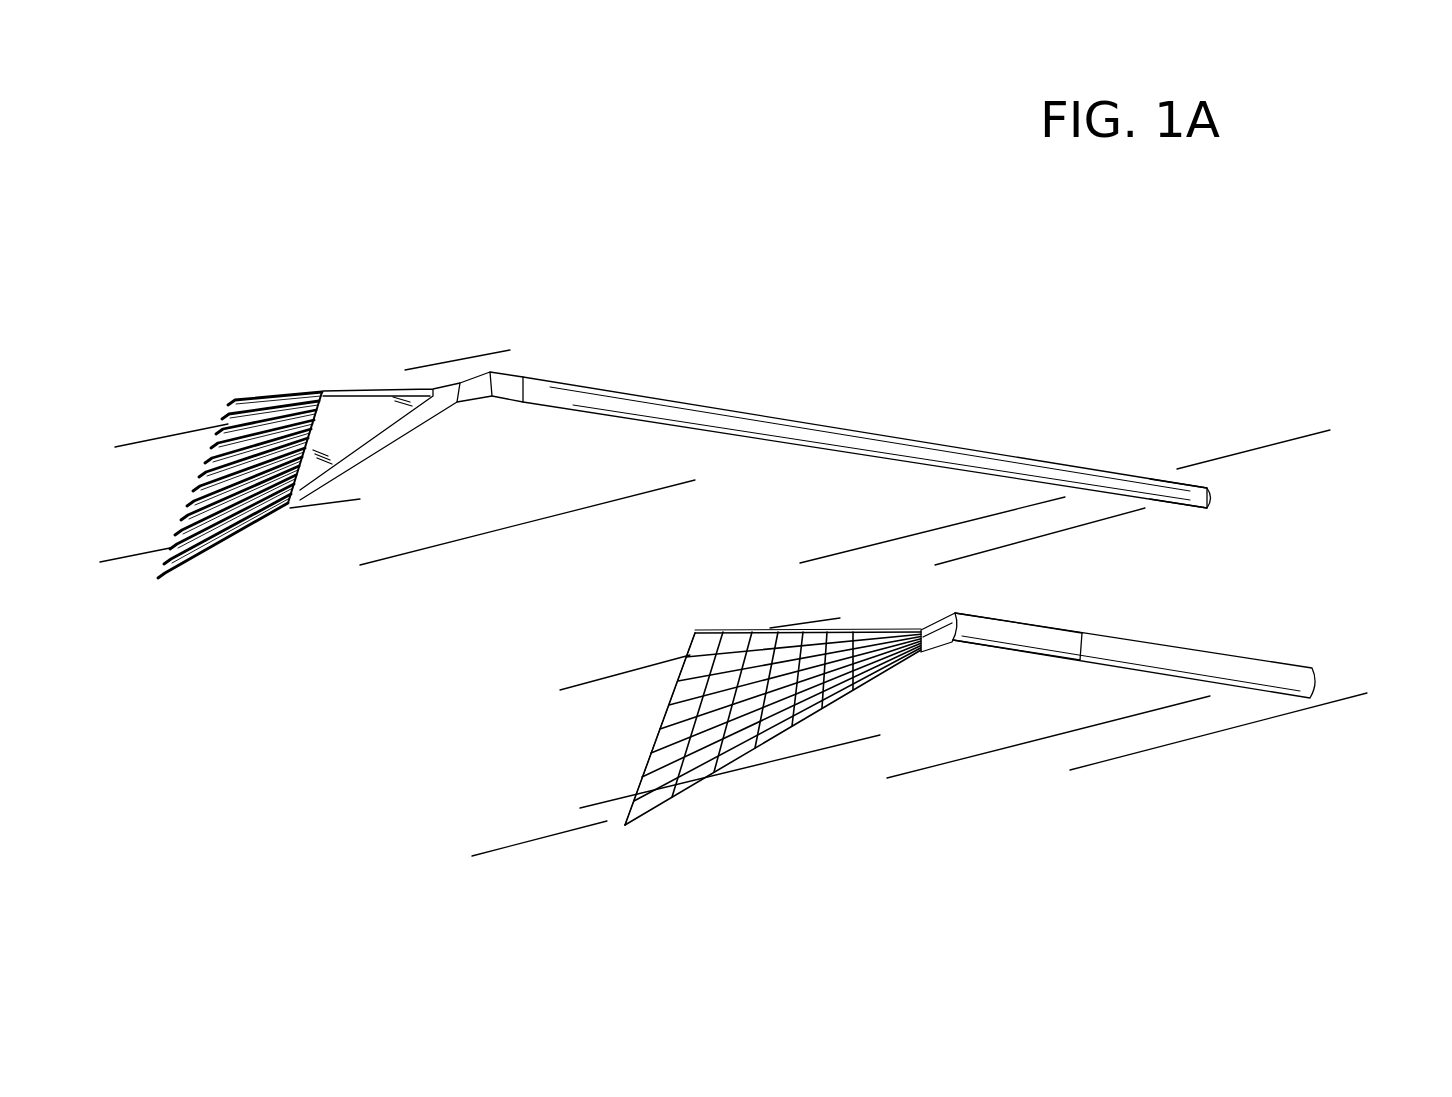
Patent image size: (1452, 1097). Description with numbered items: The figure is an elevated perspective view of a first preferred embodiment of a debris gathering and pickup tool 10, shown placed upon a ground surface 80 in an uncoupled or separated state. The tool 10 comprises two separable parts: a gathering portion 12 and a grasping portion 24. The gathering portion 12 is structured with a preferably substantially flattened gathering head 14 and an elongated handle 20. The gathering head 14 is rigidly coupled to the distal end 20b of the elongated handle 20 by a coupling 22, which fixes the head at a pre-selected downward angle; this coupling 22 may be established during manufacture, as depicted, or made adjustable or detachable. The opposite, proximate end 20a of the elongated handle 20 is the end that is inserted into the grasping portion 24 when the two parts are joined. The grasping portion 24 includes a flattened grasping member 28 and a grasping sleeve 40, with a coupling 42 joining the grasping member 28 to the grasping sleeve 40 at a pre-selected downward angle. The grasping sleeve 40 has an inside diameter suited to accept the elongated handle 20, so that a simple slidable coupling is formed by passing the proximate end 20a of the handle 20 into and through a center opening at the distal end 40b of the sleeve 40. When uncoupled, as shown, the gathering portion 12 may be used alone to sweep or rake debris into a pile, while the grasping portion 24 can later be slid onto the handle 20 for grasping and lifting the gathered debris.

The gathering and pickup tool 10 is at (373, 768).
The gathering portion 12 is at (755, 312).
The gathering head 14 is at (268, 390).
The elongated handle 20 is at (873, 442).
The proximate end of elongated handle 20a is at (1145, 486).
The distal end of elongated handle 20b is at (547, 388).
The gathering portion coupling 22 is at (480, 380).
The grasping portion 24 is at (1022, 800).
The grasping member 28 is at (730, 630).
The grasping sleeve 40 is at (1153, 655).
The distal end of grasping sleeve 40b is at (973, 623).
The grasping portion coupling 42 is at (940, 652).
The ground surface 80 is at (514, 503).